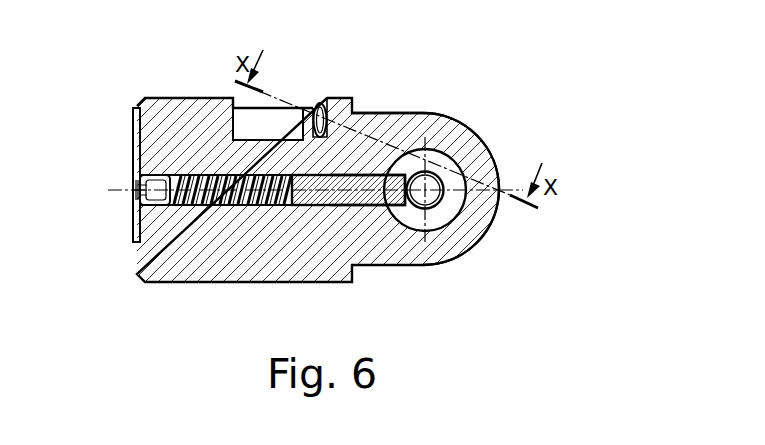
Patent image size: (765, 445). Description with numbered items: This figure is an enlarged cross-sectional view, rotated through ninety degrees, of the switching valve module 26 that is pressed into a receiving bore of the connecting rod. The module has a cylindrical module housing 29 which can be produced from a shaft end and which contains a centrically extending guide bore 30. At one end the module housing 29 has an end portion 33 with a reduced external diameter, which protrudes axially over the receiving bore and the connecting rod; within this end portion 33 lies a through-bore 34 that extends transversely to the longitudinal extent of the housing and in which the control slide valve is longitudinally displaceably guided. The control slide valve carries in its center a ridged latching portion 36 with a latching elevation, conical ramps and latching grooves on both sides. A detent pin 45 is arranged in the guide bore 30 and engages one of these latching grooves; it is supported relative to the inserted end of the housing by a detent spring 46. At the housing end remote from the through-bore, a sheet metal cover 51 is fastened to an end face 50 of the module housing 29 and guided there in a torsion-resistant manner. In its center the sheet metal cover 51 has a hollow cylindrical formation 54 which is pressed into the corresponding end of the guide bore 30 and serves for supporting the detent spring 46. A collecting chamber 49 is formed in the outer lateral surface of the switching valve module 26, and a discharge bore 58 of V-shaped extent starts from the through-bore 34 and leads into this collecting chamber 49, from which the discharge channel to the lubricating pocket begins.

The switching valve module 26 is at (433, 112).
The module housing 29 is at (193, 122).
The guide bore 30 is at (294, 205).
The end portion 33 is at (388, 128).
The through-bore 34 is at (452, 180).
The ridged latching portion 36 is at (467, 170).
The detent pin 45 is at (360, 198).
The detent spring 46 is at (197, 205).
The collecting chamber 49 is at (273, 123).
The end face 50 is at (139, 104).
The sheet metal cover 51 is at (133, 165).
The hollow cylindrical formation 54 is at (135, 204).
The discharge bore 58 is at (320, 108).